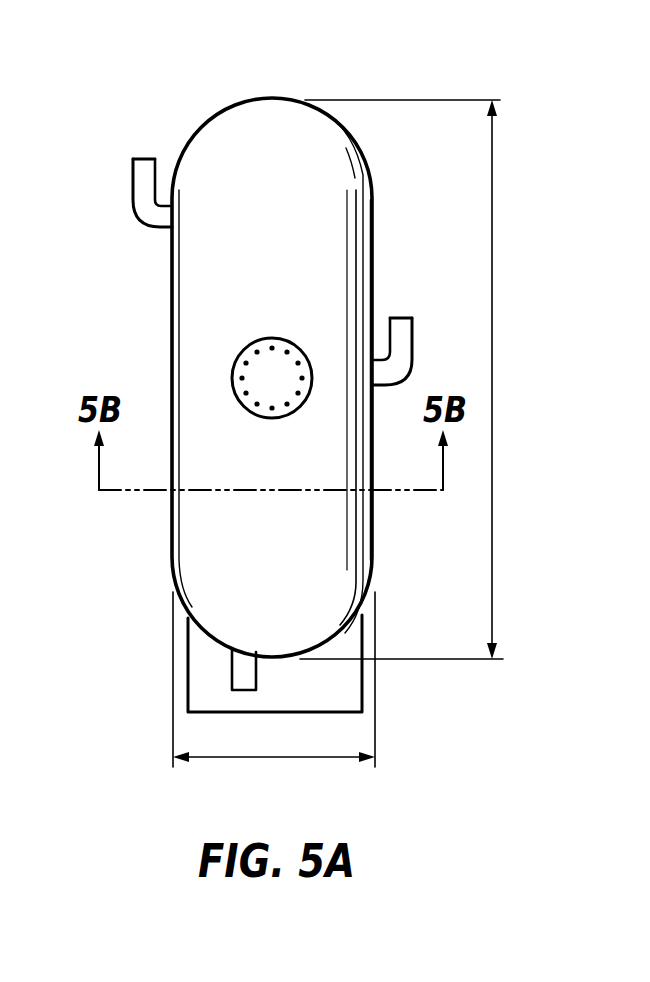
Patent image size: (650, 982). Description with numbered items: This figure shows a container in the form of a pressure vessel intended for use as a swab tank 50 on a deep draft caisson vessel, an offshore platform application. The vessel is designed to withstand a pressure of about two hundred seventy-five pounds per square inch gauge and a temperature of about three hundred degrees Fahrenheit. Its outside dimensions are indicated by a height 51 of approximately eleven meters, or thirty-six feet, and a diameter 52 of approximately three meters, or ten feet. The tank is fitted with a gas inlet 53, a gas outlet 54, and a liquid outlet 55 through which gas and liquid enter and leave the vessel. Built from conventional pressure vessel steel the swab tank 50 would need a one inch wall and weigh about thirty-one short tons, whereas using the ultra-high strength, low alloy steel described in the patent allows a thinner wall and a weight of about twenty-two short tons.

The swab tank 50 is at (186, 76).
The height 51 is at (492, 352).
The diameter 52 is at (248, 760).
The gas inlet 53 is at (143, 166).
The gas outlet 54 is at (399, 324).
The liquid outlet 55 is at (243, 680).